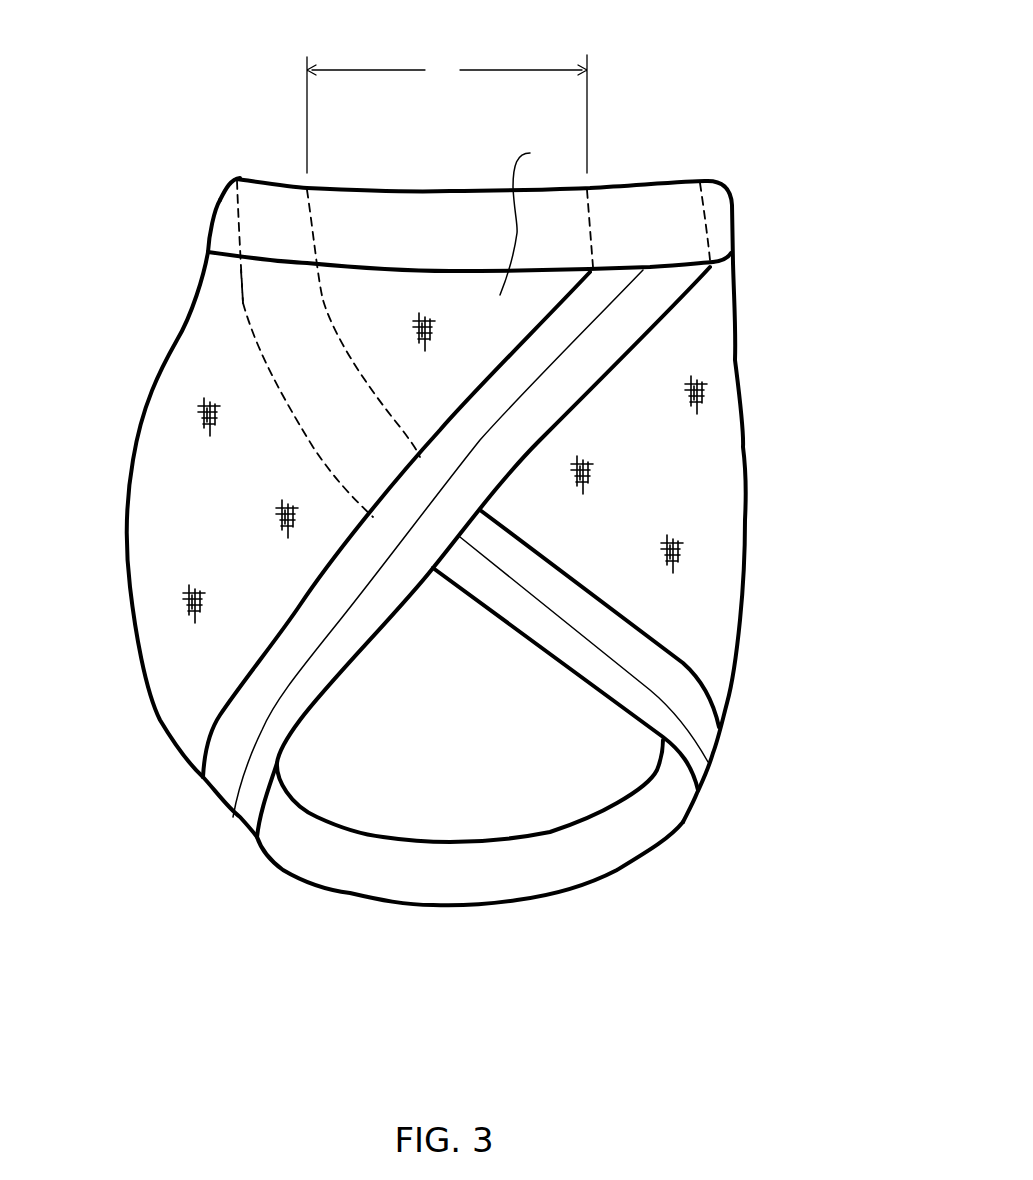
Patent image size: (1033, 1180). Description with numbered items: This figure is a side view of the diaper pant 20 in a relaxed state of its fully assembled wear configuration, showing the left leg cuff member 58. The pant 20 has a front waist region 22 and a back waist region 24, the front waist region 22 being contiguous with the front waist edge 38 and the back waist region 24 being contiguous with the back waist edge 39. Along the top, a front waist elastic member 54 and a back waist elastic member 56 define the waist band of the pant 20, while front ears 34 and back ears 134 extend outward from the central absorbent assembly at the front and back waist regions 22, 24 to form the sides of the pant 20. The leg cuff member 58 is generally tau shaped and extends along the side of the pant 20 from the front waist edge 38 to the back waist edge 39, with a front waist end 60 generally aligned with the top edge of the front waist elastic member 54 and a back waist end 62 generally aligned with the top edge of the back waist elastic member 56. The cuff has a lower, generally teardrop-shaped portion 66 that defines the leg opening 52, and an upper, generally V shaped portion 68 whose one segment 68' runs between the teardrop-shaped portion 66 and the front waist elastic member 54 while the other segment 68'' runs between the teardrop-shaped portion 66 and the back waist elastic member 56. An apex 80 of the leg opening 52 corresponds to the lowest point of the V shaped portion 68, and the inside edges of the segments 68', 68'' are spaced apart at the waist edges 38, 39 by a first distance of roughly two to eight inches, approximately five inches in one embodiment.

The diaper pant 20 is at (446, 481).
The front waist region 22 is at (743, 450).
The back waist region 24 is at (133, 473).
The front ears 34 is at (407, 290).
The front waist edge 38 is at (717, 182).
The back waist edge 39 is at (237, 178).
The leg openings 52 is at (404, 783).
The front waist elastic member 54 is at (440, 227).
The back waist elastic member 56 is at (220, 230).
The leg cuff member 58 is at (540, 412).
The front waist end 60 is at (263, 197).
The back waist end 62 is at (650, 207).
The teardrop-shaped portion 66 is at (600, 688).
The V shaped portion 68 is at (243, 410).
The segment of V shaped portion 68' is at (179, 292).
The segment of V shaped portion 68'' is at (501, 524).
The apex 80 is at (433, 570).
The back ears 134 is at (534, 218).